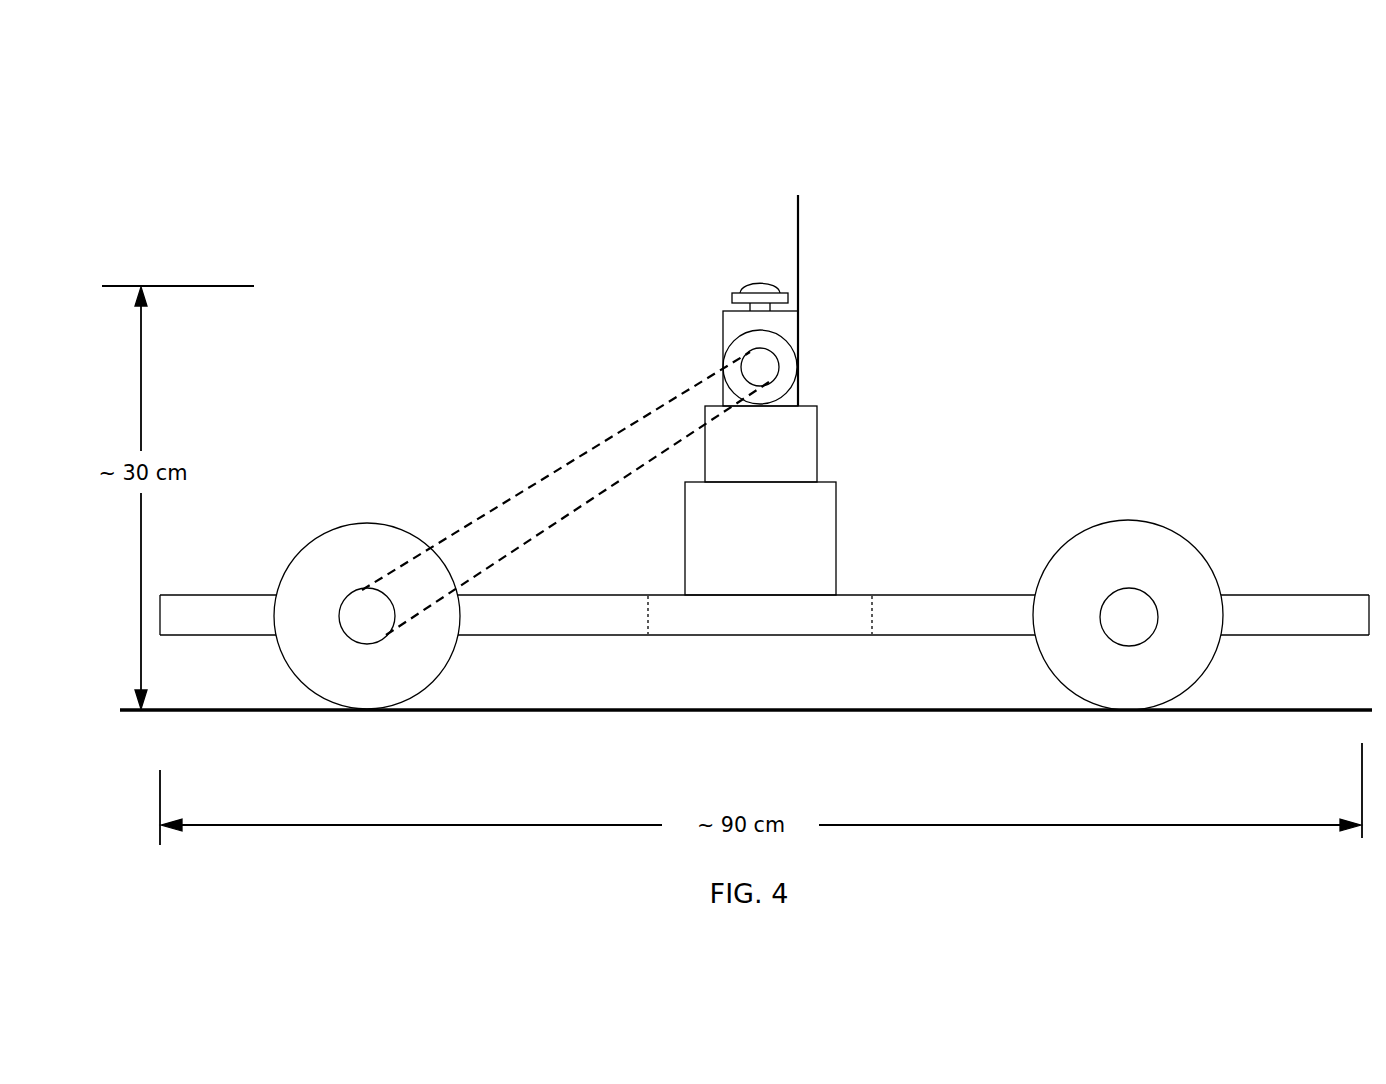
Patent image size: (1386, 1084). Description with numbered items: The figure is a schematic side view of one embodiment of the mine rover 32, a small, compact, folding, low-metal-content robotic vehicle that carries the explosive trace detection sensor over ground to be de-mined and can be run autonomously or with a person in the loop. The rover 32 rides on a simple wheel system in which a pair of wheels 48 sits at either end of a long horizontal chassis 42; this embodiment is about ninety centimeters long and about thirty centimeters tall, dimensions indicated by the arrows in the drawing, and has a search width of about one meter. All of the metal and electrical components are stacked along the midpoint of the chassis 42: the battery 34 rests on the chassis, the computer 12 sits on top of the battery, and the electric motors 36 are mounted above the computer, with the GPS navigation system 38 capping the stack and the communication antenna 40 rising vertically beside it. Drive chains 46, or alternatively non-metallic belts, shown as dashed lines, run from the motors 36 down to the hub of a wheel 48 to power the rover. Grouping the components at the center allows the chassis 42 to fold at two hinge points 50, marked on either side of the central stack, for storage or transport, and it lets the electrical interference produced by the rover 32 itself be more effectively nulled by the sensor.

The computer 12 is at (743, 458).
The mine rover 32 is at (1033, 330).
The battery 34 is at (743, 553).
The electric motors 36 is at (790, 333).
The GPS navigation system 38 is at (730, 296).
The communication antenna 40 is at (800, 238).
The chassis 42 is at (743, 627).
The drive chains 46 is at (572, 453).
The wheels 48 is at (331, 573).
The hinge points 50 is at (648, 613).